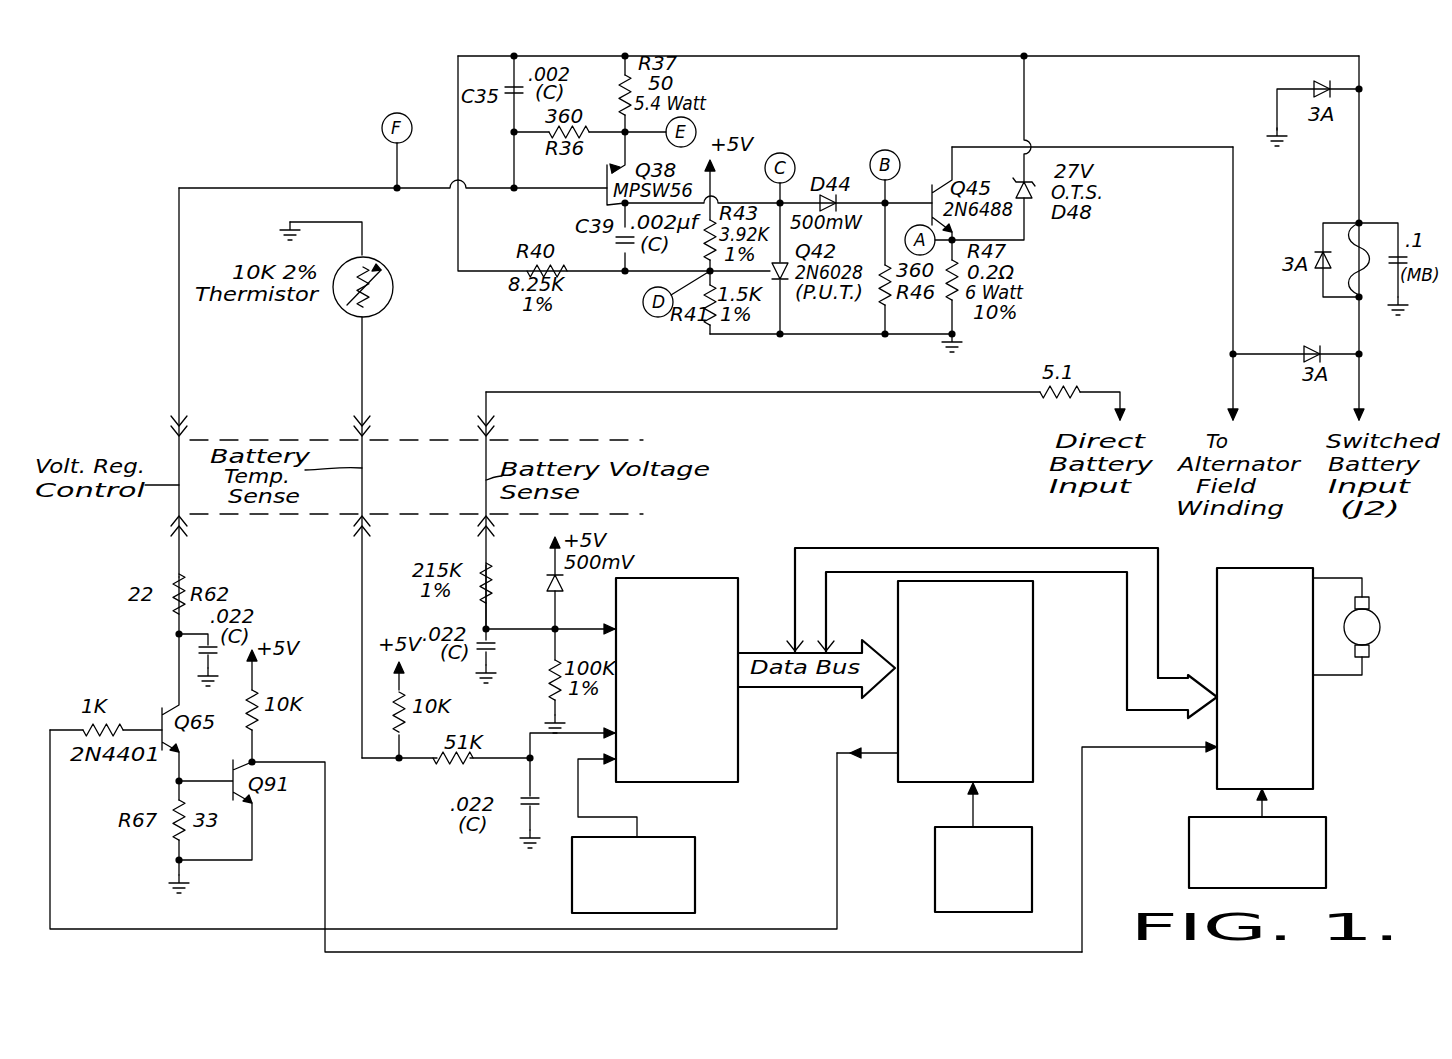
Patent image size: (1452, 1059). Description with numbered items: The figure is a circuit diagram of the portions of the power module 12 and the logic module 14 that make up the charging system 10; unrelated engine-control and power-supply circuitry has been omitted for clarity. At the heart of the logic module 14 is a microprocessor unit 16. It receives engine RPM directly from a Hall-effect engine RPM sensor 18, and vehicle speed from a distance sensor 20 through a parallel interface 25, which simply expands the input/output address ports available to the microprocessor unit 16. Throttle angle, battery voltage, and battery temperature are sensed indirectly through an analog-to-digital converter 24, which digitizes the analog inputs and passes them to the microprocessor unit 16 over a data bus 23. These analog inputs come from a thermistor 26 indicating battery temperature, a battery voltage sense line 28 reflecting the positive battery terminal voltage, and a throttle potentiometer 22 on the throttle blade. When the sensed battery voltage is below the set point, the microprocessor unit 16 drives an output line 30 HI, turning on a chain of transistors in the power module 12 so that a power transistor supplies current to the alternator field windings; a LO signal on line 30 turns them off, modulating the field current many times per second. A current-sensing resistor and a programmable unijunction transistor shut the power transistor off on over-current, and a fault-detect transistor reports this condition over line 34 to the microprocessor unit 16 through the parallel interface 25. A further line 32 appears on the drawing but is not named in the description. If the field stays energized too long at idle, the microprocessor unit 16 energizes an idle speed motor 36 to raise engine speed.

The charging system 10 is at (106, 350).
The power module 12 is at (908, 241).
The logic module 14 is at (782, 533).
The microprocessor unit 16 is at (1033, 656).
The engine RPM sensor 18 is at (935, 853).
The distance sensor 20 is at (1326, 830).
The throttle potentiometer 22 is at (695, 876).
The data bus 23 is at (1043, 567).
The analog-to-digital converter 24 is at (694, 782).
The parallel interface 25 is at (1313, 718).
The thermistor 26 is at (386, 308).
The battery voltage sense line 28 is at (906, 392).
The output line 30 is at (388, 929).
The voltage regulator control line 32 is at (179, 357).
The line 34 is at (1082, 795).
The idle speed motor 36 is at (1376, 620).